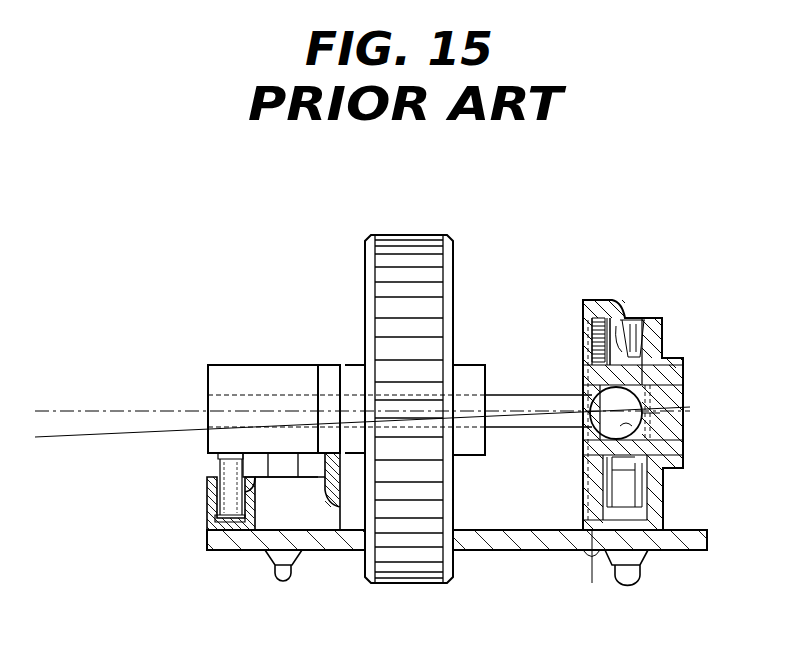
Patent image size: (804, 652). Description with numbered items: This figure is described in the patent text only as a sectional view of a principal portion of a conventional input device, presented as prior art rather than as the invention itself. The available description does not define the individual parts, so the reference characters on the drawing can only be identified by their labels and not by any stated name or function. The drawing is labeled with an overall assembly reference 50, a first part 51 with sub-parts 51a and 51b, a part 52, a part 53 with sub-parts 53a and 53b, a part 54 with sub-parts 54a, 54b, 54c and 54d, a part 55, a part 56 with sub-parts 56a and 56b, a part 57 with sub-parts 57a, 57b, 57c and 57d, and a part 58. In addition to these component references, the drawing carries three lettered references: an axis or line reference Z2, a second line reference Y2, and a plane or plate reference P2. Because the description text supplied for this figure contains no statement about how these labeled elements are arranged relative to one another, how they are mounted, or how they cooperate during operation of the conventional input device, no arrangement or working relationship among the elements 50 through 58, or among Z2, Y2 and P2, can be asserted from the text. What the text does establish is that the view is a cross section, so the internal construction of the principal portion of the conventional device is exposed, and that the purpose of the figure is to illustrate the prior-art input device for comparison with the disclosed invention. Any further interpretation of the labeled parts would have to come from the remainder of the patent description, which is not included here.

The bearing unit 50 is at (695, 352).
The bearing housing 51 is at (587, 292).
The housing side wall 51a is at (582, 452).
The housing mounting pin 51b is at (558, 528).
The spring 52 is at (597, 330).
The bearing holder 53 is at (670, 337).
The holder flange 53a is at (683, 445).
The holder step 53b is at (683, 470).
The adjusting screw 54 is at (622, 340).
The fixing screw 54a is at (630, 500).
The inner wall 54b is at (582, 365).
The upper flange 54c is at (683, 372).
The bearing surface 54d is at (683, 393).
The lower housing wall 55 is at (660, 500).
The motor mount 56 is at (270, 520).
The mount bracket arm 56a is at (310, 500).
The motor body 56b is at (282, 520).
The worm wheel 57 is at (416, 367).
The wheel teeth 57a is at (385, 243).
The shaft 57b is at (515, 400).
The hub 57c is at (320, 400).
The ball end of shaft 57d is at (663, 420).
The fixing screw 58 is at (207, 500).
The rotation axis Z2 is at (78, 409).
The inclined axis line Y2 is at (45, 438).
The base plate P2 is at (503, 540).